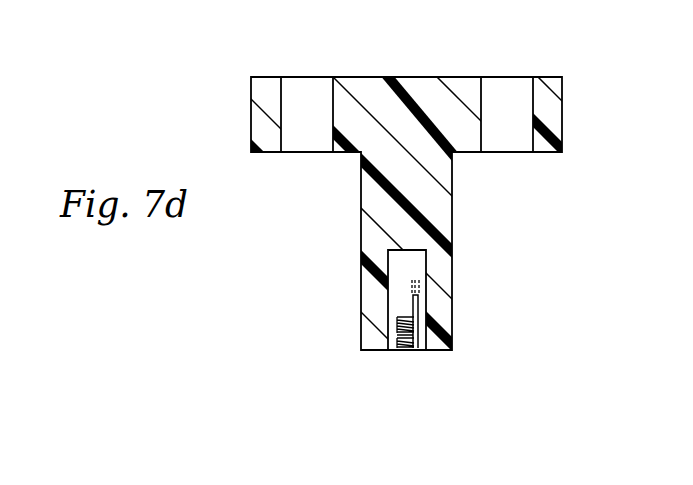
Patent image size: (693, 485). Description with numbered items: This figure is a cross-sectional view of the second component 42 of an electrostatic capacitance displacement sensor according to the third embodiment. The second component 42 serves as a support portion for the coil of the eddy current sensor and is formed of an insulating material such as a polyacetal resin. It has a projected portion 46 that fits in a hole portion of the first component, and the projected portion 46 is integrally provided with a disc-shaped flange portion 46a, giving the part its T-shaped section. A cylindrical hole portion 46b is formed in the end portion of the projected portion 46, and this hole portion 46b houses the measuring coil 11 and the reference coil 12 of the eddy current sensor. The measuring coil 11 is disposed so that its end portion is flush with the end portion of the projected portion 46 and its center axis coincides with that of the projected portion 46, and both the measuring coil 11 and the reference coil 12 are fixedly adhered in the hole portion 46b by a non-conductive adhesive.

The second component 42 is at (236, 60).
The projected portion 46 is at (453, 202).
The flange portion 46a is at (563, 112).
The hole portion 46b is at (421, 255).
The reference coil 12 is at (397, 317).
The measuring coil 11 is at (410, 349).